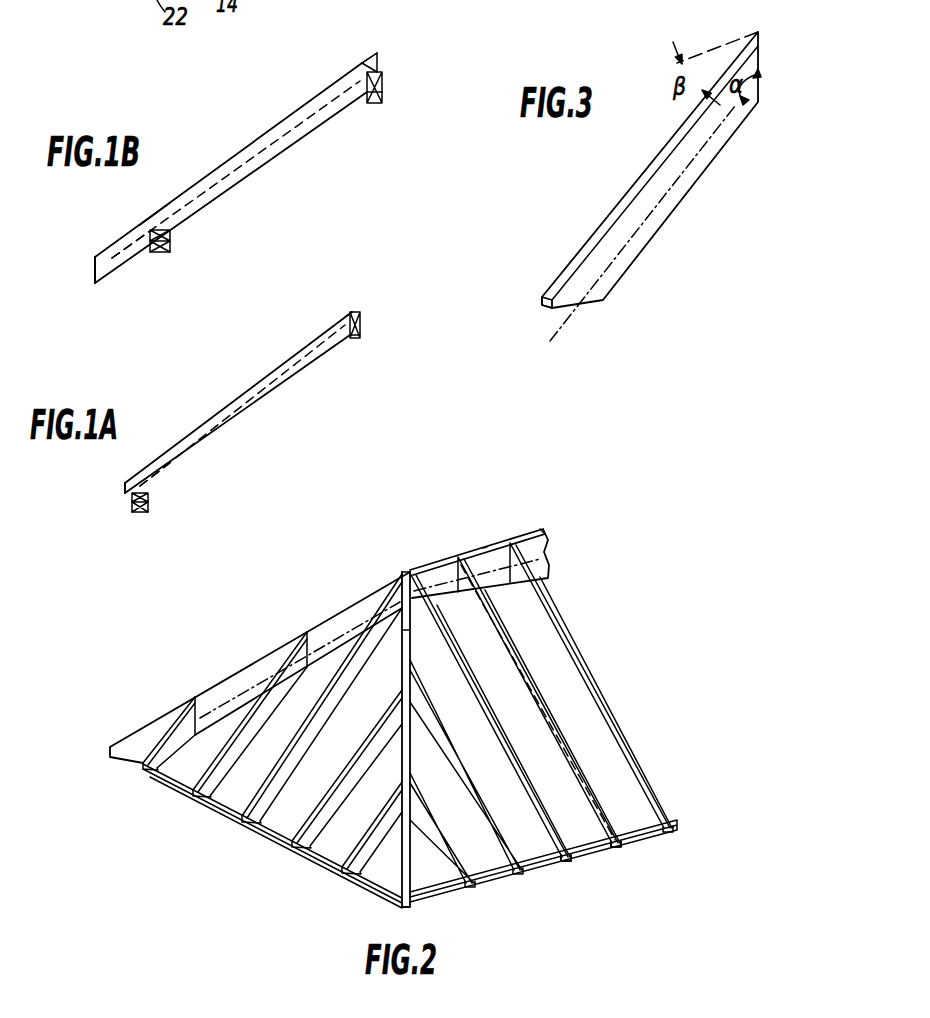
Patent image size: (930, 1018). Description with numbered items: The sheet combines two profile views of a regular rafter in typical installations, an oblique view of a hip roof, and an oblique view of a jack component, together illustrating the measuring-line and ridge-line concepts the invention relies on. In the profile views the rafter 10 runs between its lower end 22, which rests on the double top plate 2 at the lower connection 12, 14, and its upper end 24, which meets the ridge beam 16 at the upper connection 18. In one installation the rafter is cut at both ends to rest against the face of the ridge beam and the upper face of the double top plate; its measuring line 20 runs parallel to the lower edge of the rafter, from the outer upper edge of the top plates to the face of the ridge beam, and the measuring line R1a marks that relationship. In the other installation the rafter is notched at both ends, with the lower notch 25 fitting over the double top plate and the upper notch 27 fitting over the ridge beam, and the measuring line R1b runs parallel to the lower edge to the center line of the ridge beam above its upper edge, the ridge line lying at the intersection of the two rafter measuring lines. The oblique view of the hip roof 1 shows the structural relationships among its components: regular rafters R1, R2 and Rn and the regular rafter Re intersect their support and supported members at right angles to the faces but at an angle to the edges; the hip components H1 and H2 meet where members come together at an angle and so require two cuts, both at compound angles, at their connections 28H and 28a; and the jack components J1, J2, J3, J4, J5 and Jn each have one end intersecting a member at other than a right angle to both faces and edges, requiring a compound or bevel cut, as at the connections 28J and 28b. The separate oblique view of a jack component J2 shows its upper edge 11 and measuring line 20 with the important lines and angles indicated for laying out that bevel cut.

In FIG. 2, the rafter 1 is at (522, 582).
In FIG. 2, the top plate 2 is at (640, 815).
In FIG. 1B, the rafter 10 is at (287, 143).
In FIG. 1A, the rafter 10 is at (293, 382).
In FIG. 3, the rafter 10 is at (663, 222).
In FIG. 3, the top face of rafter 11 is at (647, 205).
In FIG. 1B, the lower connector 12 is at (170, 234).
In FIG. 1A, the lower connector 12 is at (148, 498).
In FIG. 1B, the lower connector plate 14 is at (163, 253).
In FIG. 1A, the lower connector plate 14 is at (148, 513).
In FIG. 1B, the ridge board 16 is at (377, 104).
In FIG. 1A, the ridge board 16 is at (357, 339).
In FIG. 2, the ridge board 16 is at (547, 583).
In FIG. 1B, the upper connector 18 is at (383, 84).
In FIG. 1A, the upper connector 18 is at (360, 323).
In FIG. 2, the upper connector 18 is at (531, 531).
In FIG. 1B, the rafter centerline 20 is at (317, 108).
In FIG. 1A, the rafter centerline 20 is at (304, 353).
In FIG. 3, the rafter centerline 20 is at (688, 163).
In FIG. 2, the rafter centerline 20 is at (527, 703).
In FIG. 1B, the lower end of rafter 22 is at (144, 228).
In FIG. 1A, the lower end of rafter 22 is at (127, 504).
In FIG. 1B, the upper end of rafter 24 is at (365, 64).
In FIG. 1A, the upper end of rafter 24 is at (348, 317).
In FIG. 2, the upper end of rafter 24 is at (484, 573).
In FIG. 1B, the bevel cut 25 is at (157, 214).
In FIG. 1B, the end cut 27 is at (380, 56).
In FIG. 2, the connector 28a is at (408, 637).
In FIG. 2, the connector 28b is at (556, 862).
In FIG. 2, the hip connector 28H is at (408, 570).
In FIG. 2, the jack connector 28J is at (305, 628).
In FIG. 2, the hip rafter H1 is at (413, 653).
In FIG. 2, the hip rafter H2 is at (310, 630).
In FIG. 2, the jack rafter J1 is at (152, 771).
In FIG. 3, the jack rafter J2 is at (540, 297).
In FIG. 2, the jack rafter J2 is at (204, 799).
In FIG. 2, the jack rafter J3 is at (300, 850).
In FIG. 2, the jack rafter J4 is at (350, 875).
In FIG. 2, the jack rafter J5 is at (467, 887).
In FIG. 2, the jack rafter Jn is at (512, 875).
In FIG. 2, the common rafter Re is at (252, 826).
In FIG. 2, the rafter R1 is at (577, 871).
In FIG. 2, the rafter R2 is at (626, 859).
In FIG. 2, the rafter Rn is at (602, 702).
In FIG. 1A, the rafter line R1a is at (152, 464).
In FIG. 1B, the rafter line R1b is at (146, 227).